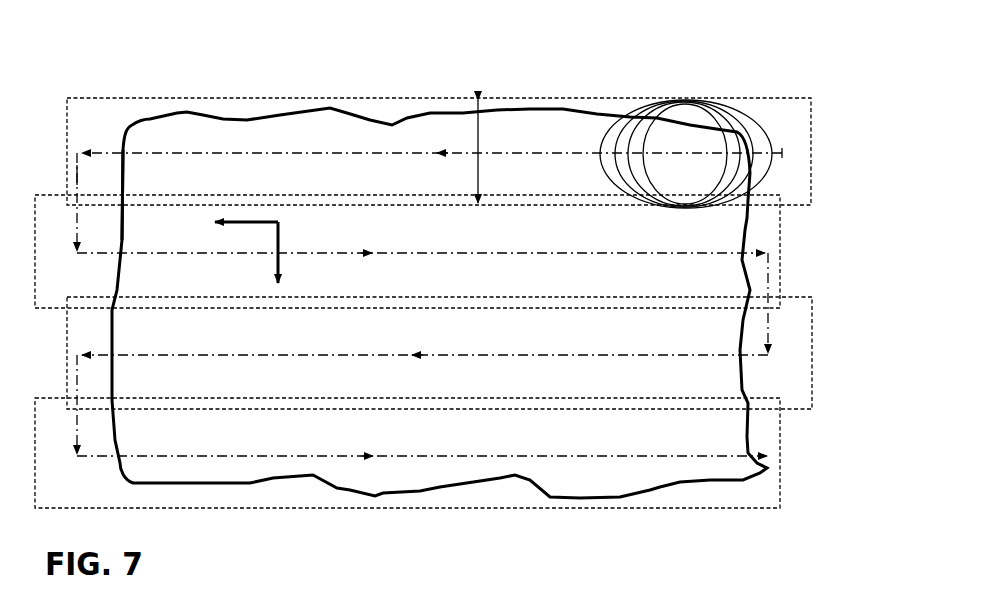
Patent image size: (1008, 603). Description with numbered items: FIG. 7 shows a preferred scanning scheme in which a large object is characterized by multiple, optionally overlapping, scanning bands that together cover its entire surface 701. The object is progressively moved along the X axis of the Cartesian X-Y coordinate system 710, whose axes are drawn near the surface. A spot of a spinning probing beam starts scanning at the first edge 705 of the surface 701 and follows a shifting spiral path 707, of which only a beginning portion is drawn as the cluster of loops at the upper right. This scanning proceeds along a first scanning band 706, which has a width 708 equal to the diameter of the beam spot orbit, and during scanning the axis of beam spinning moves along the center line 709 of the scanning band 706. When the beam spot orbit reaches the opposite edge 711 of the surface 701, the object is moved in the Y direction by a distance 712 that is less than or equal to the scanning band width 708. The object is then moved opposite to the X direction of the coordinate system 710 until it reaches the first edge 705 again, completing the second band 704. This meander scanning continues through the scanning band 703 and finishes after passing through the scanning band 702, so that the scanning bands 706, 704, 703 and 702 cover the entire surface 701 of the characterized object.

The surface 701 is at (703, 464).
The scanning band 702 is at (780, 455).
The scanning band 703 is at (812, 355).
The second band 704 is at (780, 250).
The first edge 705 is at (745, 230).
The first scanning band 706 is at (811, 153).
The shifting spiral path 707 is at (782, 152).
The width 708 is at (478, 143).
The center line 709 is at (415, 153).
The Cartesian X-Y coordinate system 710 is at (278, 230).
The opposite edge 711 is at (123, 240).
The distance 712 is at (77, 175).